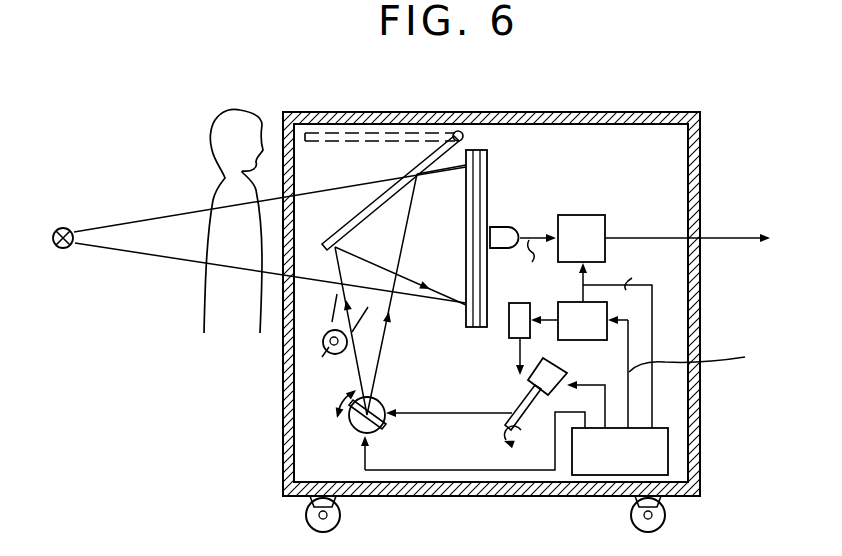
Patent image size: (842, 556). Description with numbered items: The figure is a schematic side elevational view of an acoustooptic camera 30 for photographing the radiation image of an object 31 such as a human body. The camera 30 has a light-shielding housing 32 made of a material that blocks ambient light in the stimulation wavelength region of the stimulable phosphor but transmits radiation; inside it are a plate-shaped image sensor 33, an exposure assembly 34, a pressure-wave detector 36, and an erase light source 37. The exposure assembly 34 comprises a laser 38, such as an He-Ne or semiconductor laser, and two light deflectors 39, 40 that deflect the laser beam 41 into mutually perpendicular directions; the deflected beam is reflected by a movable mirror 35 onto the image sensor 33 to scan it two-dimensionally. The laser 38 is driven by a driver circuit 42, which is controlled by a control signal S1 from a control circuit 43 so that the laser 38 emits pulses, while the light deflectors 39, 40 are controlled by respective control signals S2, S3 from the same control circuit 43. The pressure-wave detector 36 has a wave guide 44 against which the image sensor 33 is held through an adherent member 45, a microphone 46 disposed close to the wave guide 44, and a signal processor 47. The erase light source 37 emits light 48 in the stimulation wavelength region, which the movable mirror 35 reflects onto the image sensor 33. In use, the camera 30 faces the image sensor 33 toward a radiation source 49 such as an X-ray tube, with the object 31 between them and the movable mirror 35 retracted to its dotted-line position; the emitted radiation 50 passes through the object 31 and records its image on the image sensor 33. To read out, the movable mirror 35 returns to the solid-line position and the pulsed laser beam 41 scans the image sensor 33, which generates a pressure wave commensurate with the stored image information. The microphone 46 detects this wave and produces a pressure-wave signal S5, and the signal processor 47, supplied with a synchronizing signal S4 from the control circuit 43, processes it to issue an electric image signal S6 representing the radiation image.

The acoustooptic camera 30 is at (654, 103).
The object 31 is at (228, 250).
The light-shielding housing 32 is at (286, 392).
The image sensor 33 is at (466, 188).
The exposure assembly 34 is at (487, 456).
The movable mirror 35 is at (338, 130).
The pressure-wave detector 36 is at (574, 203).
The erase light source 37 is at (323, 338).
The laser 38 is at (509, 328).
The light deflector 39 is at (501, 434).
The light deflector 40 is at (353, 427).
The laser beam 41 is at (513, 352).
The driver circuit 42 is at (572, 301).
The control circuit 43 is at (634, 467).
The wave guide 44 is at (488, 150).
The adherent member 45 is at (466, 131).
The microphone 46 is at (517, 227).
The signal processor 47 is at (625, 207).
The light 48 is at (333, 297).
The radiation source 49 is at (70, 250).
The radiation 50 is at (156, 220).
The control signal S1 is at (694, 364).
The control signal S2 is at (594, 380).
The control signal S3 is at (386, 476).
The synchronizing signal S4 is at (643, 272).
The pressure-wave signal S5 is at (518, 264).
The image signal S6 is at (687, 218).